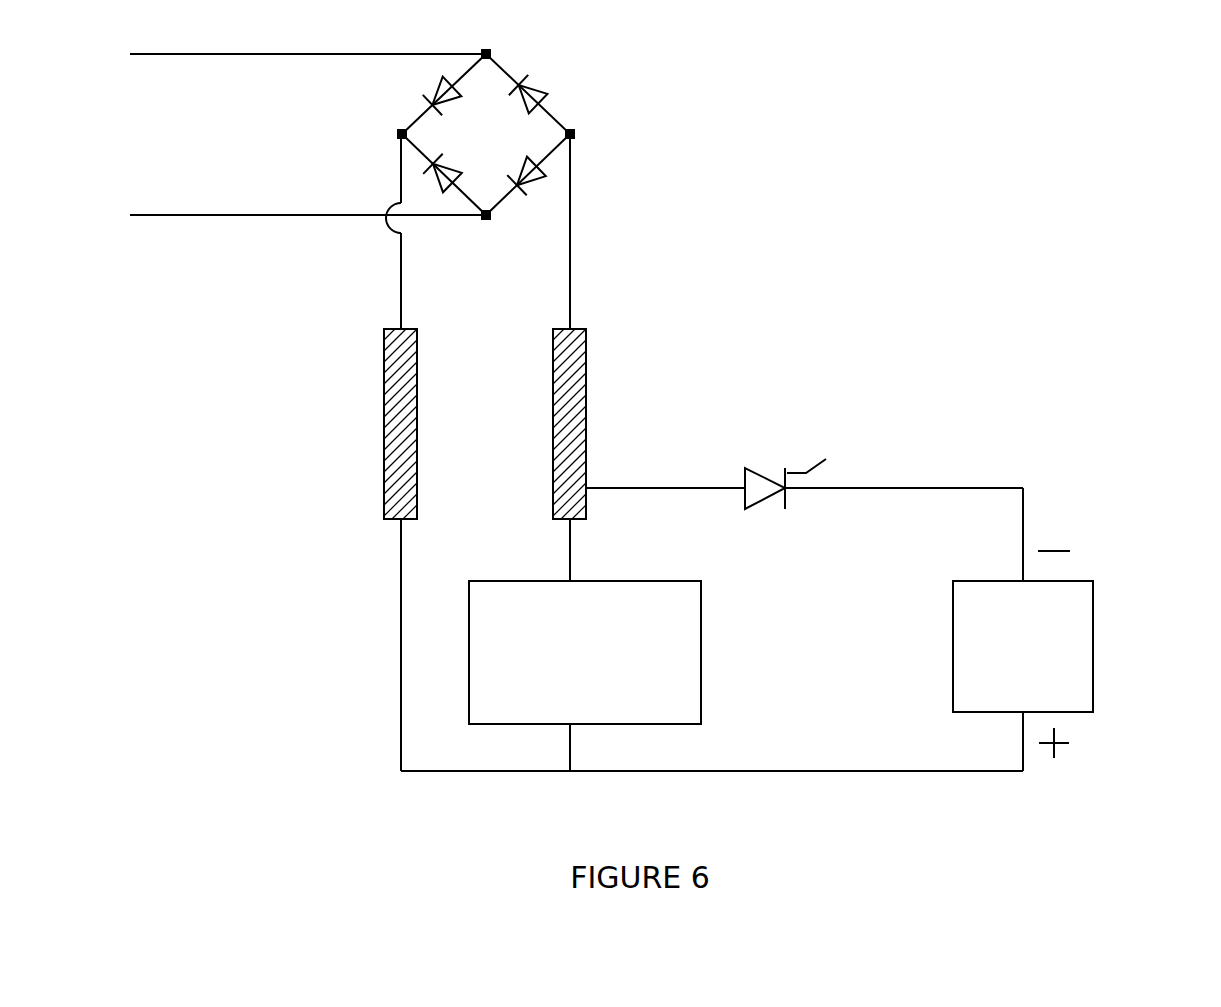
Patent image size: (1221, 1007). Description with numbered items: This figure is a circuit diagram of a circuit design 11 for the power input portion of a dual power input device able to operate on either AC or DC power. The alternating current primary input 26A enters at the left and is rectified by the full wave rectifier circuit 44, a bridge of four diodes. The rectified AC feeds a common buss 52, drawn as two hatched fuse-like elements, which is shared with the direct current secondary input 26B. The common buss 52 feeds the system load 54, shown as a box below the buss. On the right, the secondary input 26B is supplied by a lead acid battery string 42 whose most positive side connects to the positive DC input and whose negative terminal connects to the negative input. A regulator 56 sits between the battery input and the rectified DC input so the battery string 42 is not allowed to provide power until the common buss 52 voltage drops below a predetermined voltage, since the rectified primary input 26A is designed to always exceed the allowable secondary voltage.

The primary input 26A is at (180, 195).
The secondary input 26B is at (852, 719).
The full wave rectifier circuit 44 is at (575, 113).
The circuit design 11 is at (655, 286).
The common buss 52 is at (385, 407).
The regulator 56 is at (750, 484).
The system load 54 is at (500, 708).
The battery string 42 is at (1075, 615).